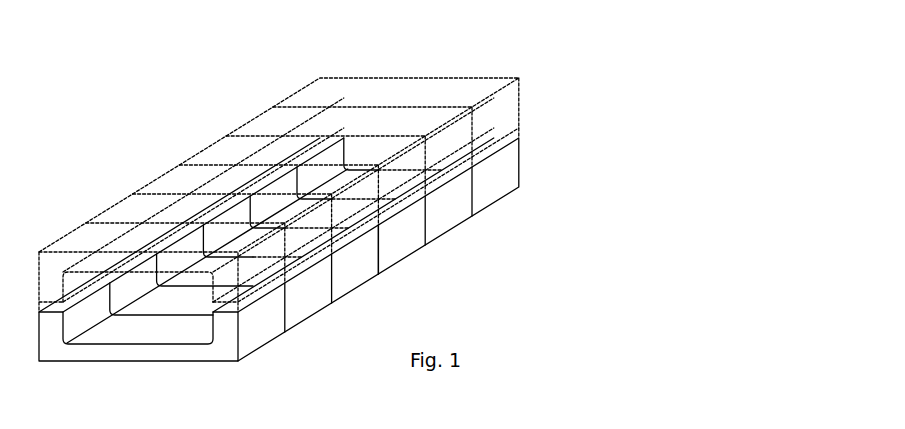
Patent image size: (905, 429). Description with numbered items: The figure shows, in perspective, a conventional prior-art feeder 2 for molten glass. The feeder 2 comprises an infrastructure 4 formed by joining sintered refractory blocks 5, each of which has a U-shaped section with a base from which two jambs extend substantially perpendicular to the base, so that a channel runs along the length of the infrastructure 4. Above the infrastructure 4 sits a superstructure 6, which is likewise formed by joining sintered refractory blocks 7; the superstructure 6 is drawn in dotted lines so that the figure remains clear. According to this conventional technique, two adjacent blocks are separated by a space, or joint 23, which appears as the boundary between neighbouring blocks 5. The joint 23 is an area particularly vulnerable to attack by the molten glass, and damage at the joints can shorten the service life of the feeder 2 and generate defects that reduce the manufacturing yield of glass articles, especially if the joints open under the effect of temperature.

The feeder 2 is at (336, 187).
The infrastructure 4 is at (316, 249).
The sintered refractory blocks 5 is at (407, 240).
The superstructure 6 is at (499, 107).
The sintered refractory blocks 7 is at (457, 136).
The joint 23 is at (337, 278).